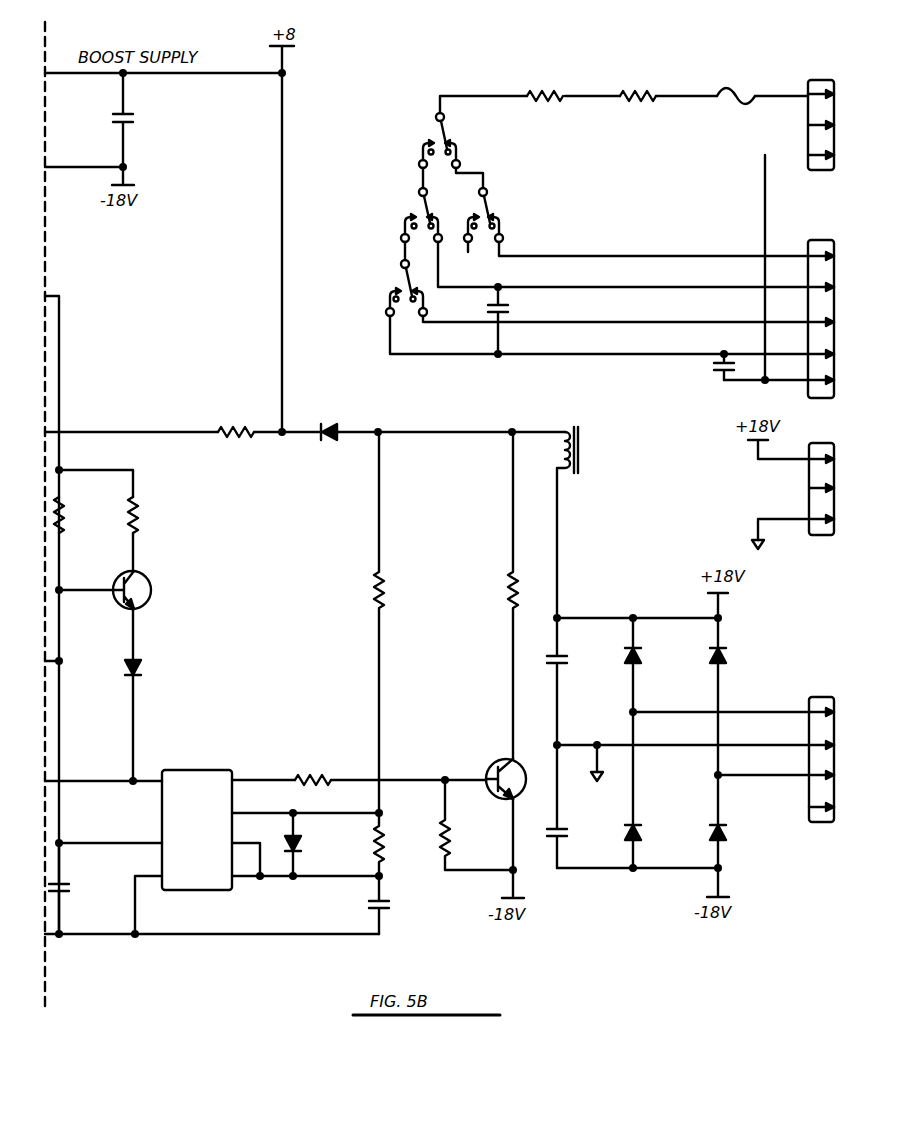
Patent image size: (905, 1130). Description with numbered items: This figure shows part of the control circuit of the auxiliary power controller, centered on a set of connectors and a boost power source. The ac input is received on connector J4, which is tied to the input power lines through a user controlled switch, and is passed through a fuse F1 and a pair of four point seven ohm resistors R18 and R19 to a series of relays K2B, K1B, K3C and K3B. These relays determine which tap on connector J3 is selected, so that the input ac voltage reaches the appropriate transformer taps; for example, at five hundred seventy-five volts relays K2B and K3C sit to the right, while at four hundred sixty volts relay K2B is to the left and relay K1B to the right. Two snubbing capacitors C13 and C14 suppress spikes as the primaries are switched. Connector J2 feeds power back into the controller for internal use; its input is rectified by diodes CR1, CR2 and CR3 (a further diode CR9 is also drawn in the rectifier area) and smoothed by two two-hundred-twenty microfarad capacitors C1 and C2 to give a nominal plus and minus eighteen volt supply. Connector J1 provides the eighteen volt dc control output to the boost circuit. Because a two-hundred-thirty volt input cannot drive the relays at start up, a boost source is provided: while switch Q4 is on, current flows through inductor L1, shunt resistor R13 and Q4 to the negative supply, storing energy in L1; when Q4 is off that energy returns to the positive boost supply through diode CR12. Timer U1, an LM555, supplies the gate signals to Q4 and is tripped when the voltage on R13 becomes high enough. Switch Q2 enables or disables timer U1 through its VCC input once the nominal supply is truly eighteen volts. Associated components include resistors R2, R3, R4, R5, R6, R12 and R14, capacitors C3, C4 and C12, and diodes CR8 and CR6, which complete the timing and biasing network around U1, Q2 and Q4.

The capacitor C12 is at (142, 129).
The resistor R18 is at (545, 85).
The resistor R19 is at (638, 85).
The fuse F1 is at (736, 83).
The connector J4 is at (821, 114).
The relay K2B is at (423, 140).
The relay K1B is at (405, 215).
The relay K3C is at (503, 220).
The connector J3 is at (821, 308).
The relay K3B is at (391, 288).
The capacitor C13 is at (516, 320).
The capacitor C14 is at (701, 367).
The resistor R6 is at (236, 421).
The diode CR12 is at (326, 421).
The inductor L1 is at (582, 522).
The connector J1 is at (821, 478).
The resistor R3 is at (71, 515).
The resistor R2 is at (147, 515).
The switch Q2 is at (119, 587).
The diode CR6 is at (152, 668).
The resistor R12 is at (398, 622).
The shunt resistor R13 is at (490, 595).
The smoothing capacitor C2 is at (571, 681).
The diode CR2 is at (652, 665).
The diode CR3 is at (737, 696).
The connector J2 is at (821, 748).
The timer U1 is at (197, 818).
The resistor R4 is at (313, 769).
The switch Q4 is at (494, 771).
The diode CR8 is at (311, 844).
The resistor R14 is at (397, 844).
The resistor R5 is at (476, 825).
The capacitor C3 is at (70, 888).
The capacitor C4 is at (392, 905).
The smoothing capacitor C1 is at (571, 806).
The diode CR1 is at (652, 790).
The diode CR9 is at (737, 821).